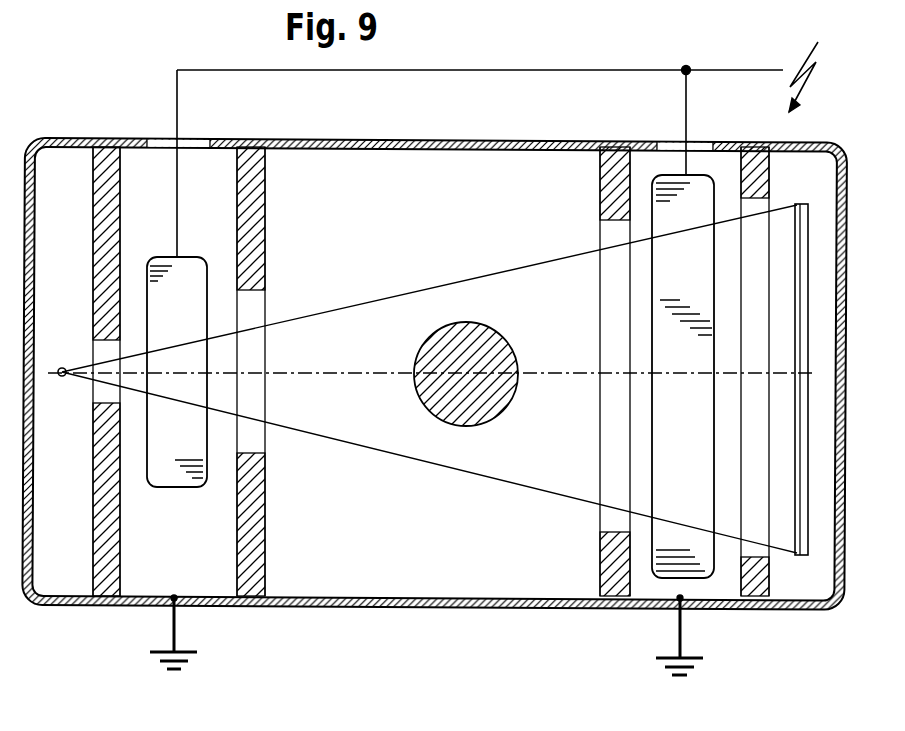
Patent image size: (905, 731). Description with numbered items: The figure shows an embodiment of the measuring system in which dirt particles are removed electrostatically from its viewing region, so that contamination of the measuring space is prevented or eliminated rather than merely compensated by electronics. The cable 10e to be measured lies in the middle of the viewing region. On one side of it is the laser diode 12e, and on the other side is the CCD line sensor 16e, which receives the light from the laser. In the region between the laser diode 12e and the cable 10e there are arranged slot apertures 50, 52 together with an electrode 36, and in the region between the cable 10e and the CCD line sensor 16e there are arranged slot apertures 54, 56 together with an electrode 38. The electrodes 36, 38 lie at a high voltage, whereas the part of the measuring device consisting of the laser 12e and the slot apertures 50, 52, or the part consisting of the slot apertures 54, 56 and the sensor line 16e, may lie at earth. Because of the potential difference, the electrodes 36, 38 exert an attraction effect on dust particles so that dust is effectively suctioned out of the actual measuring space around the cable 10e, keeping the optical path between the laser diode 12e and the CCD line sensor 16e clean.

The cable 10e is at (493, 360).
The laser diode 12e is at (62, 366).
The CCD line sensor 16e is at (805, 553).
The electrode 36 is at (172, 472).
The electrode 38 is at (675, 562).
The slot aperture 50 is at (97, 565).
The slot aperture 52 is at (258, 553).
The slot aperture 54 is at (600, 563).
The slot aperture 56 is at (757, 578).